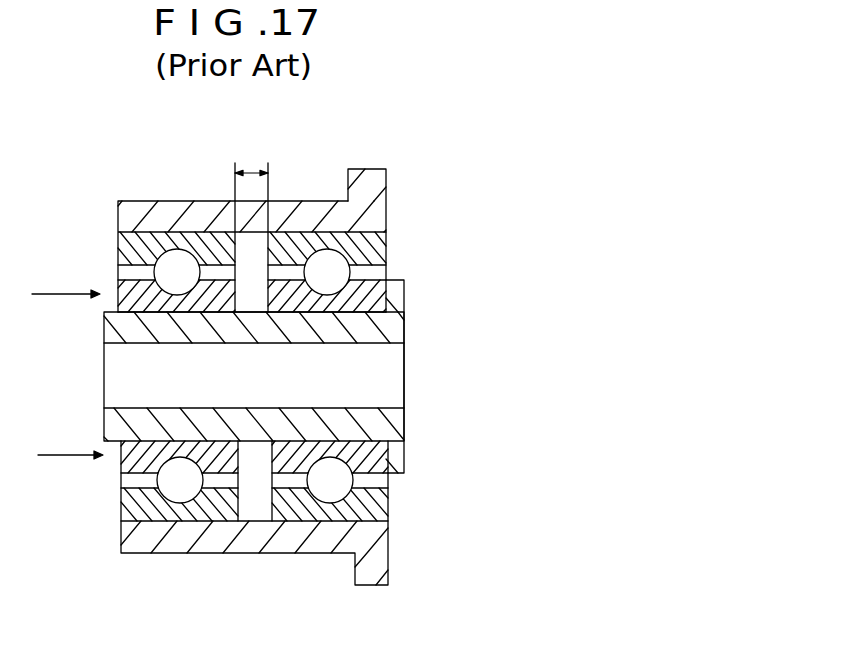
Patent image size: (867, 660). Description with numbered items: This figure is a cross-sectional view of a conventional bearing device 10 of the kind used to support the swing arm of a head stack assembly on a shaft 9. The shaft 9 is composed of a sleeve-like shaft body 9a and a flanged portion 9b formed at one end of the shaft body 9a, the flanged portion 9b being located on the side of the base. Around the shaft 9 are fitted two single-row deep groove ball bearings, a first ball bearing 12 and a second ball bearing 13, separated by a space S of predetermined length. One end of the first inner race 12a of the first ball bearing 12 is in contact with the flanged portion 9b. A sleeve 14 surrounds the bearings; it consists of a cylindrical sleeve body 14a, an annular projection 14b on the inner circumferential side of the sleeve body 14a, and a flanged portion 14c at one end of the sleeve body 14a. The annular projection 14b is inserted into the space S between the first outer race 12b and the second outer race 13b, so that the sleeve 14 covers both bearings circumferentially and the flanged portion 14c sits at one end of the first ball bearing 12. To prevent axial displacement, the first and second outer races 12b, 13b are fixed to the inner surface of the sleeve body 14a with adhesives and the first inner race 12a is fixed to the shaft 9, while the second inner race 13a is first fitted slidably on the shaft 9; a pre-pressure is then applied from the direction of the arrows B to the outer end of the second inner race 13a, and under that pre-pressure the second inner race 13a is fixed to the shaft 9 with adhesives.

The bearing device 10 is at (533, 107).
The shaft 9 is at (433, 315).
The shaft body 9a is at (337, 425).
The flanged portion 9b is at (397, 453).
The first ball bearing 12 is at (322, 212).
The first inner race 12a is at (367, 300).
The first outer race 12b is at (375, 250).
The second ball bearing 13 is at (168, 227).
The second inner race 13a is at (138, 463).
The second outer race 13b is at (140, 510).
The sleeve 14 is at (373, 214).
The sleeve body 14a is at (133, 218).
The annular projection 14b is at (259, 520).
The flanged portion 14c is at (372, 185).
The space S is at (256, 170).
The arrows indicating pre-pressure direction B is at (54, 376).